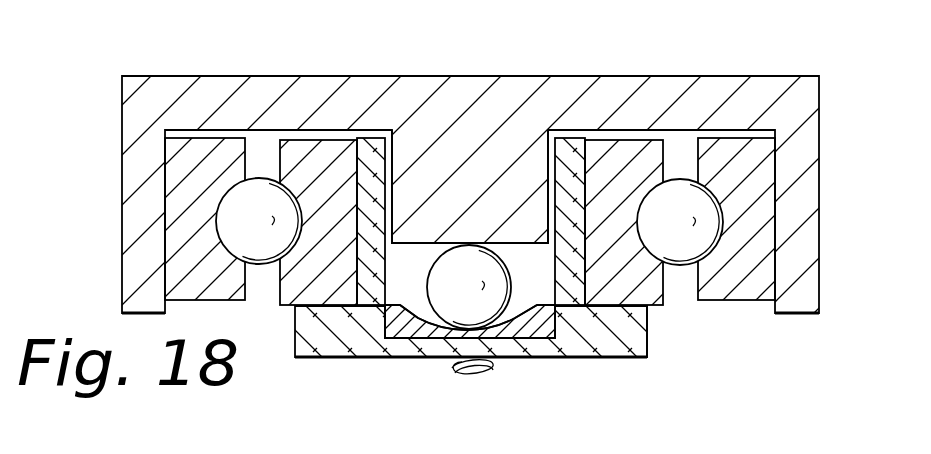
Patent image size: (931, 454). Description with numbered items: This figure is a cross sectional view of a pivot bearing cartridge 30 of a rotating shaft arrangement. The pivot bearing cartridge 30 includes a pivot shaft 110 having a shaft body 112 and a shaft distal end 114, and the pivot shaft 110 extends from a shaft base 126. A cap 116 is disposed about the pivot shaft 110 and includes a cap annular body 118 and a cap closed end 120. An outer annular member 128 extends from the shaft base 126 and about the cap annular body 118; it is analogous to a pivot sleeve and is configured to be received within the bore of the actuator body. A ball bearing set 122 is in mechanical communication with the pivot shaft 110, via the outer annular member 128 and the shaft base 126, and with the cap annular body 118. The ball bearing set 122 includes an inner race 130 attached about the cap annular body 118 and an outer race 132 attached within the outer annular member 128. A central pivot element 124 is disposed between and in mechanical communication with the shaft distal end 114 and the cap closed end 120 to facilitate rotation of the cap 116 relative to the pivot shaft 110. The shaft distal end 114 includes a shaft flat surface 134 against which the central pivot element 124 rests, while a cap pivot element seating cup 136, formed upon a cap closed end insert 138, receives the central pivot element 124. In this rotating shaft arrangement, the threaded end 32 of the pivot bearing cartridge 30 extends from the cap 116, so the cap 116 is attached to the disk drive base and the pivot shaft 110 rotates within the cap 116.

The pivot bearing cartridge 30 is at (110, 91).
The threaded end 32 is at (452, 372).
The pivot shaft 110 is at (480, 212).
The shaft body 112 is at (478, 163).
The shaft distal end 114 is at (472, 108).
The cap 116 is at (605, 343).
The cap annular body 118 is at (571, 178).
The cap closed end 120 is at (348, 325).
The ball bearing set 122 is at (753, 347).
The central pivot element 124 is at (488, 305).
The shaft base 126 is at (671, 79).
The outer annular member 128 is at (822, 236).
The inner race 130 is at (657, 286).
The outer race 132 is at (736, 285).
The shaft flat surface 134 is at (413, 233).
The cap pivot element seating cup 136 is at (414, 336).
The cap closed end insert 138 is at (546, 330).